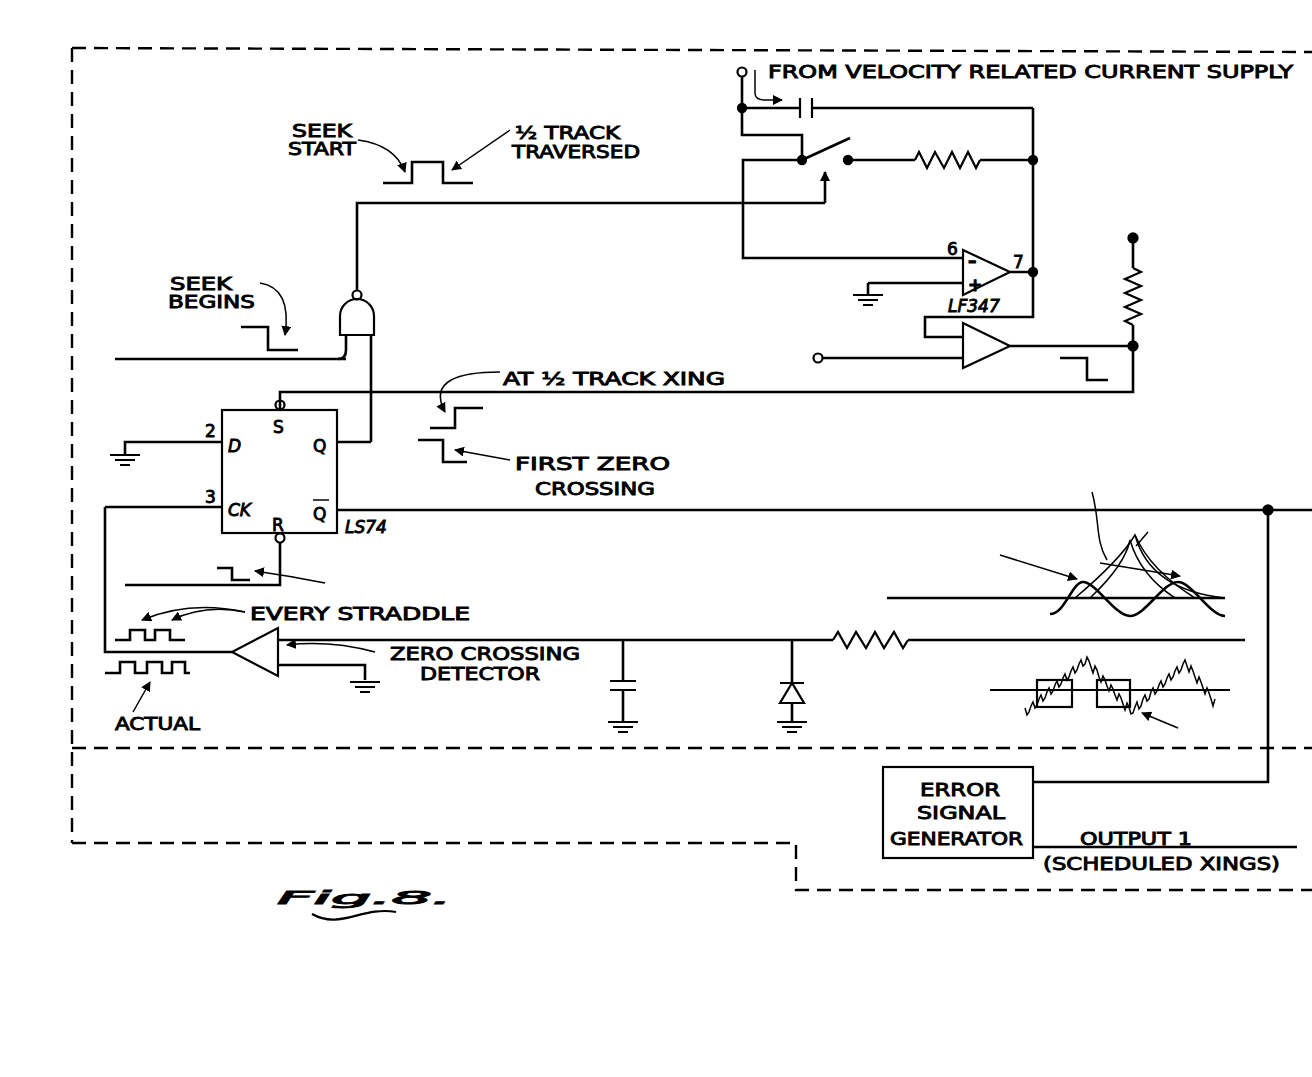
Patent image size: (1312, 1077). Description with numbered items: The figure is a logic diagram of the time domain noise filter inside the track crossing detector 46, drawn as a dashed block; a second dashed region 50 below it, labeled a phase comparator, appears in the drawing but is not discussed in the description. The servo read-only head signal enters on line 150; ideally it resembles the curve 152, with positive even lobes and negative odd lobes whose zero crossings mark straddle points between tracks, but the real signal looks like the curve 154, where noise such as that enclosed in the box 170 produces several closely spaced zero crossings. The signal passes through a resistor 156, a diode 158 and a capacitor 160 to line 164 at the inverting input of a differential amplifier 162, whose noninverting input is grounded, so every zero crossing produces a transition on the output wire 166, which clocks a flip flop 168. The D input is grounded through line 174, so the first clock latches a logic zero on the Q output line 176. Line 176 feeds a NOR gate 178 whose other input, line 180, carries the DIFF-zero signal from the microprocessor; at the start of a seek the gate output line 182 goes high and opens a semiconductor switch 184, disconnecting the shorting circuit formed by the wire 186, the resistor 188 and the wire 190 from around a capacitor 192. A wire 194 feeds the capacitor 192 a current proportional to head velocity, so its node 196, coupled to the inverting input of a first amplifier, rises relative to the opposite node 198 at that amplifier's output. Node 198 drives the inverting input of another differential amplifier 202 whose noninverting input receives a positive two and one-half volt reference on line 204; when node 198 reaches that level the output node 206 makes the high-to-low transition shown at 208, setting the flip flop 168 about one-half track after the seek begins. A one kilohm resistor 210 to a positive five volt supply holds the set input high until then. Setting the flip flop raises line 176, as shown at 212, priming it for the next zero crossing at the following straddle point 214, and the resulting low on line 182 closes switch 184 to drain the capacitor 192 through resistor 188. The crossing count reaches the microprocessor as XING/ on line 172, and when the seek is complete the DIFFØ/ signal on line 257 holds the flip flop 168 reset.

The track crossing detector 46 is at (648, 48).
The phase comparator 50 is at (605, 845).
The line 150 is at (945, 643).
The curve 152 is at (1062, 547).
The curve 154 is at (1072, 741).
The resistor 156 is at (882, 643).
The diode 158 is at (782, 698).
The capacitor 160 is at (612, 690).
The differential amplifier 162 is at (240, 662).
The line 164 is at (512, 640).
The output wire 166 is at (108, 556).
The flip flop 168 is at (222, 517).
The box 170 is at (1035, 685).
The line 172 is at (697, 513).
The line 174 is at (155, 440).
The line 176 is at (355, 444).
The NOR gate 178 is at (380, 325).
The line 180 is at (205, 362).
The output line 182 is at (357, 256).
The semiconductor switch 184 is at (826, 152).
The wire 186 is at (742, 122).
The resistor 188 is at (950, 158).
The wire 190 is at (1036, 137).
The capacitor 192 is at (815, 108).
The wire 194 is at (740, 87).
The node 196 is at (745, 256).
The node 198 is at (1036, 197).
The differential amplifier 202 is at (1000, 330).
The line 204 is at (897, 360).
The output node 206 is at (1100, 346).
The high-to-low transition 208 is at (1092, 376).
The 1K resistor 210 is at (1140, 272).
The approximate peak 212 is at (460, 425).
The straddle point 214 is at (1098, 705).
The line 257 is at (280, 562).